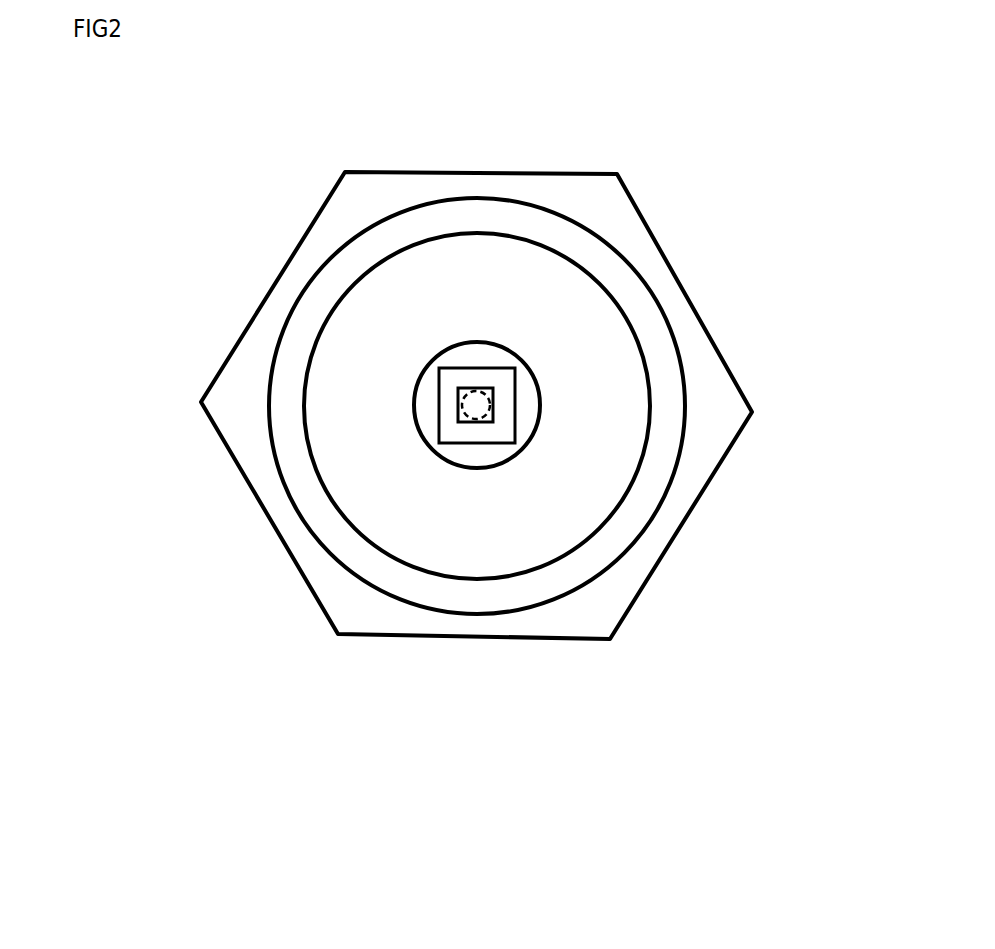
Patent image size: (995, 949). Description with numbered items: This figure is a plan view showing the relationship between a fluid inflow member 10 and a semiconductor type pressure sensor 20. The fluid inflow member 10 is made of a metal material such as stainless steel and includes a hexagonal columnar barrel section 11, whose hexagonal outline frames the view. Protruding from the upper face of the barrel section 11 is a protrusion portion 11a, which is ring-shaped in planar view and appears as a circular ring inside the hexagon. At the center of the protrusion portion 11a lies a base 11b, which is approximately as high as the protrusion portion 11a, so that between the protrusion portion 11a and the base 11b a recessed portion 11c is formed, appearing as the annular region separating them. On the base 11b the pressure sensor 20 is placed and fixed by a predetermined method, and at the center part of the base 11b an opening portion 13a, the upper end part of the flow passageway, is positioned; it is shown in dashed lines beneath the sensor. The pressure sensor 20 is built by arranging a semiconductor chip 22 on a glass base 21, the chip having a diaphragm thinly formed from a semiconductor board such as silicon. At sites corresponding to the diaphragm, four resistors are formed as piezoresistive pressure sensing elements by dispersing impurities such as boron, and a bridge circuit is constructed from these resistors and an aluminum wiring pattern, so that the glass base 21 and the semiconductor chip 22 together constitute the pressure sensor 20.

The fluid inflow member 10 is at (266, 271).
The barrel section 11 is at (293, 562).
The protrusion portion 11a is at (285, 417).
The base 11b is at (540, 405).
The recessed portion 11c is at (528, 292).
The opening portion 13a is at (496, 395).
The pressure sensor 20 is at (337, 748).
The glass base 21 is at (439, 425).
The semiconductor chip 22 is at (482, 422).